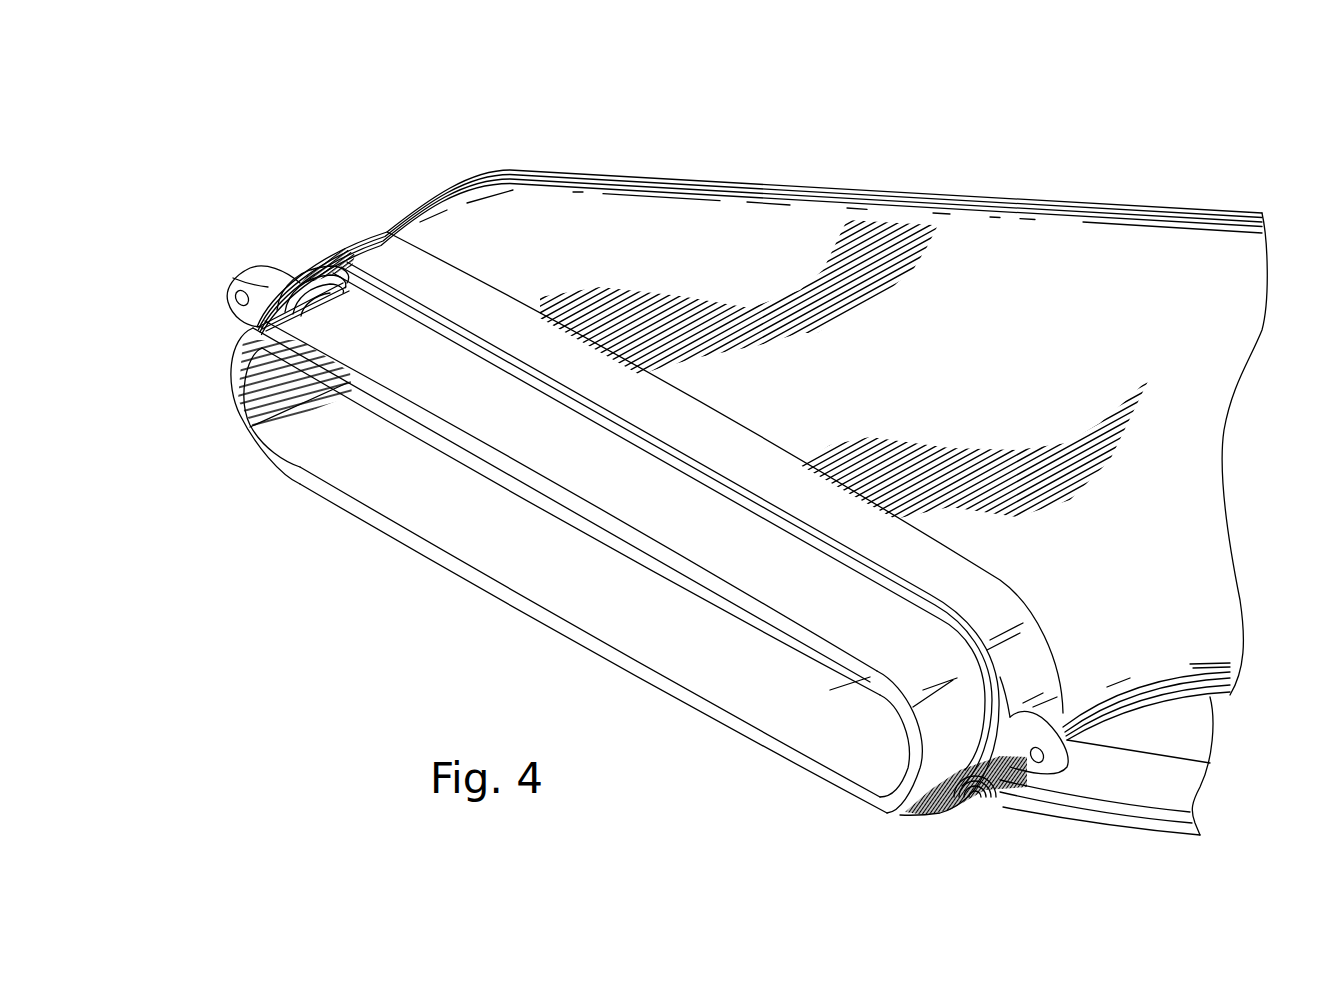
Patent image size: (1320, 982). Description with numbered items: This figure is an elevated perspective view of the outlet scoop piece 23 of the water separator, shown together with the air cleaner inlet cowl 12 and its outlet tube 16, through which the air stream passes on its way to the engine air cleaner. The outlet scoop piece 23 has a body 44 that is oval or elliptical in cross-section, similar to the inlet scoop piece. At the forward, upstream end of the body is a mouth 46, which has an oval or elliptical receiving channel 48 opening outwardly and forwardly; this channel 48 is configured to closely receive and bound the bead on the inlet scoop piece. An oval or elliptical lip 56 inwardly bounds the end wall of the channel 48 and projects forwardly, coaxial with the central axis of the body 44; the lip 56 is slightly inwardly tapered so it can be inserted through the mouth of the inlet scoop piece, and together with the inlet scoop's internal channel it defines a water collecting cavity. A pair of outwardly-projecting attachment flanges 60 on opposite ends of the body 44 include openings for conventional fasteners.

The air cleaner inlet tube or cowl 12 is at (762, 395).
The outlet tube 16 is at (1045, 792).
The outlet scoop piece 23 is at (647, 538).
The body 44 is at (617, 176).
The mouth 46 is at (803, 769).
The receiving channel 48 is at (942, 800).
The lip 56 is at (413, 353).
The attachment flanges 60 is at (240, 276).